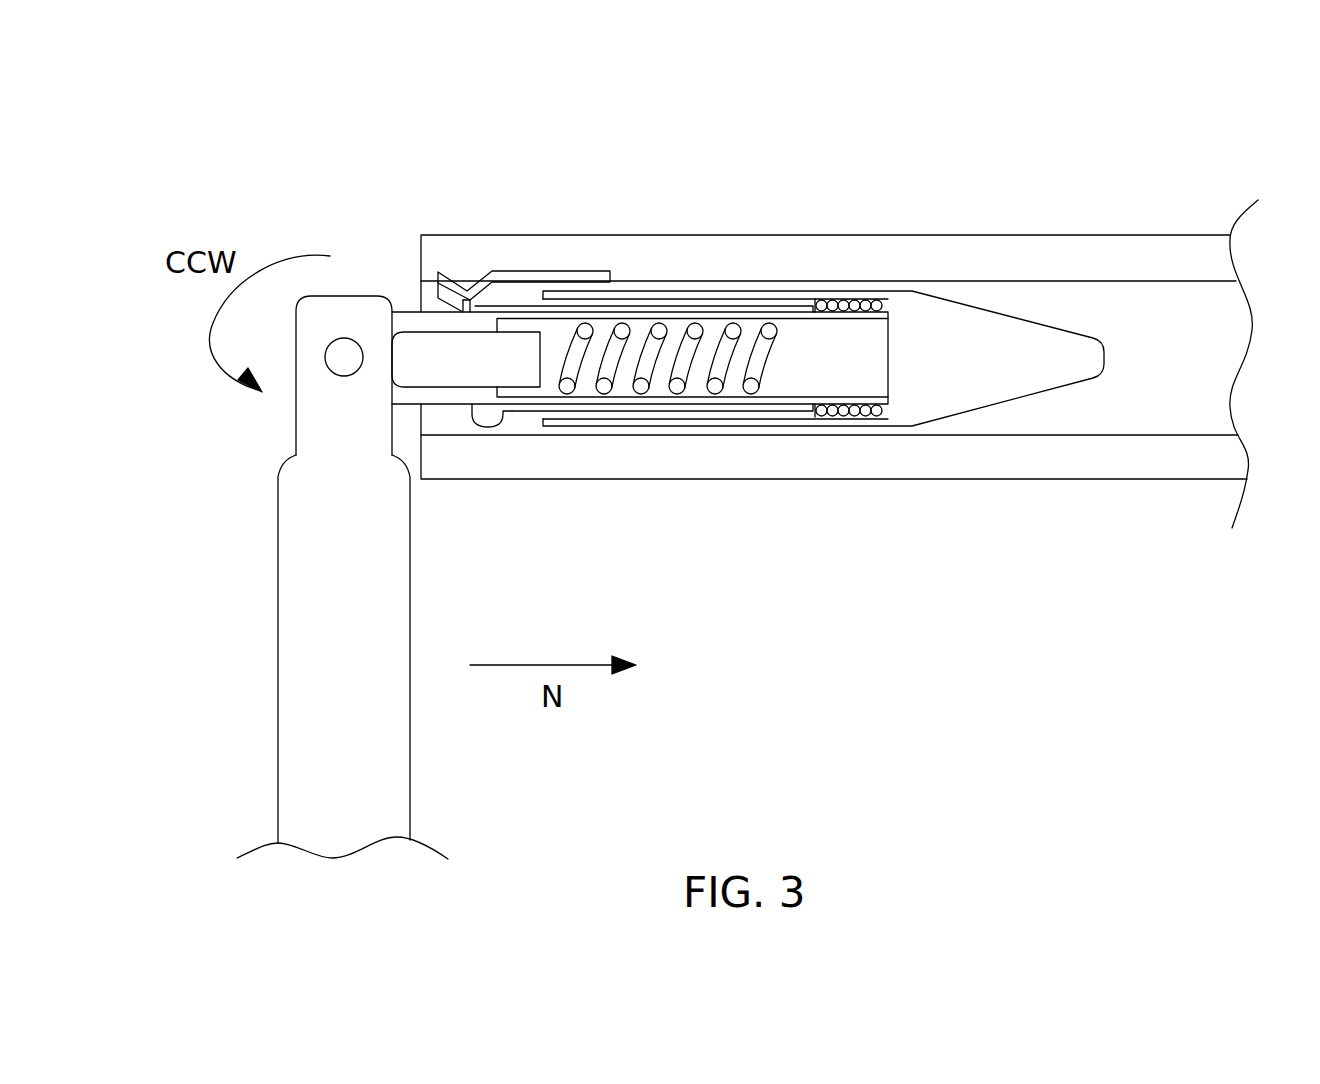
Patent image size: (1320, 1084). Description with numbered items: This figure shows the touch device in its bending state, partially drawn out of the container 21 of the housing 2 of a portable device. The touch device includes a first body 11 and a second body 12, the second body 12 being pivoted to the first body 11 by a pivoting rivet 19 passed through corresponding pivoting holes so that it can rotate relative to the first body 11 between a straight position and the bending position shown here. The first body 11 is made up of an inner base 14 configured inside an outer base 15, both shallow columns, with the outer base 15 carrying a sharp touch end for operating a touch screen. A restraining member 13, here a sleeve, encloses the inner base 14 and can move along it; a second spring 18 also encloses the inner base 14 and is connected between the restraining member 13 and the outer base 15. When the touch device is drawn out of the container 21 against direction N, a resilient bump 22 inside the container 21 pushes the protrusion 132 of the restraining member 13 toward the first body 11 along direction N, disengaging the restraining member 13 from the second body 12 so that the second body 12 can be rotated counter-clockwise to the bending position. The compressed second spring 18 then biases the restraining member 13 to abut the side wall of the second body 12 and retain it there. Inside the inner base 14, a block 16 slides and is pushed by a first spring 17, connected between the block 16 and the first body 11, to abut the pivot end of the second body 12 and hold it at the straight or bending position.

The housing 2 is at (1052, 255).
The container 21 is at (1147, 380).
The first body 11 is at (789, 256).
The second body 12 is at (340, 650).
The restraining member 13 is at (722, 412).
The inner base 14 is at (762, 318).
The outer base 15 is at (802, 292).
The block 16 is at (511, 357).
The first spring 17 is at (758, 372).
The second spring 18 is at (833, 412).
The pivoting rivet 19 is at (344, 357).
The resilient bump 22 is at (471, 295).
The protrusion 132 is at (487, 303).